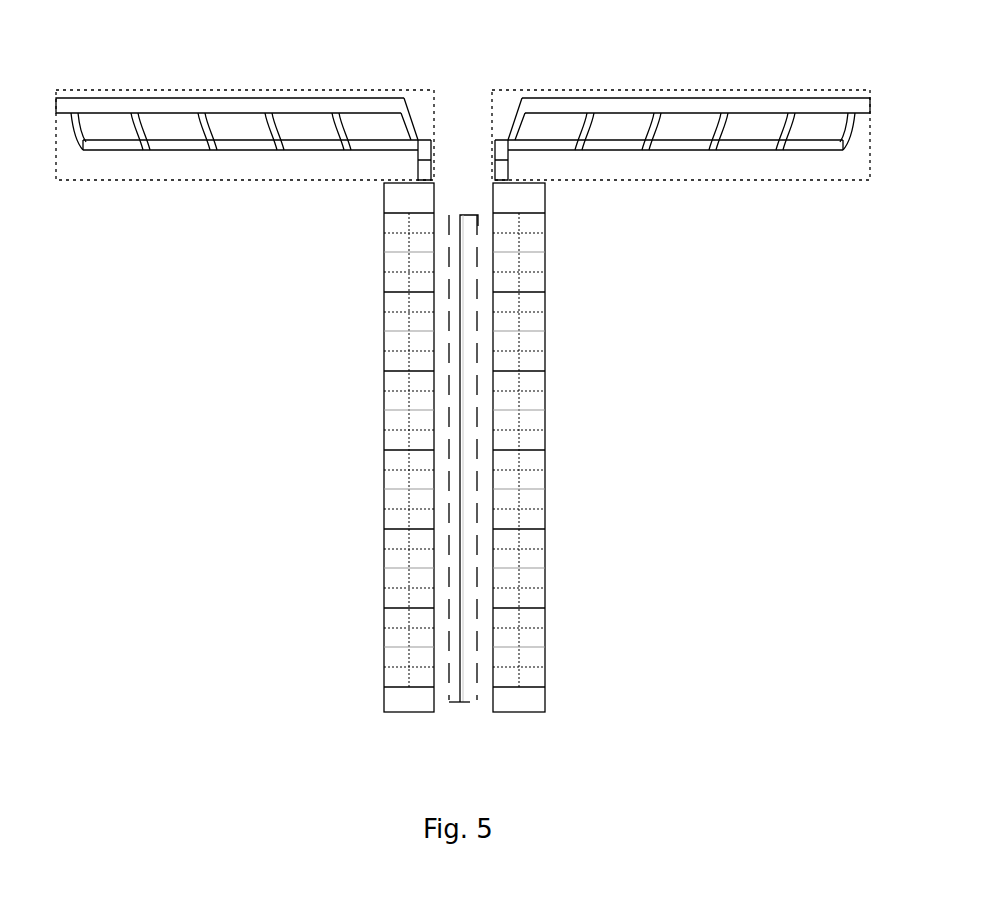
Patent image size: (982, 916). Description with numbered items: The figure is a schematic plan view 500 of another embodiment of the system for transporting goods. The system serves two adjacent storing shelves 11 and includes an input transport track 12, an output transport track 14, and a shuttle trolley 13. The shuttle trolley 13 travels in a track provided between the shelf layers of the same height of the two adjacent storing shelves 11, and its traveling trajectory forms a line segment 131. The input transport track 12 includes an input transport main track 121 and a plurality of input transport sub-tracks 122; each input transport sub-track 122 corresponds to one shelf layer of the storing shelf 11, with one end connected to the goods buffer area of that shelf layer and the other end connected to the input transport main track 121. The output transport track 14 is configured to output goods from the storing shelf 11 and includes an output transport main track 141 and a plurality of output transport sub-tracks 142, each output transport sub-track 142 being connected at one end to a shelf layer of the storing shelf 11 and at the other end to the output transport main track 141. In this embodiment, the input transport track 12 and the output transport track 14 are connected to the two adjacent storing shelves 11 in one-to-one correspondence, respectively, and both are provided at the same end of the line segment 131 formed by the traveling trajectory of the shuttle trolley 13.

The schematic plan view 500 is at (836, 31).
The storing shelf 11 is at (545, 302).
The input transport track 12 is at (315, 90).
The input transport main track 121 is at (192, 98).
The input transport sub-track 122 is at (128, 150).
The shuttle trolley 13 is at (483, 469).
The line segment 131 is at (470, 704).
The output transport track 14 is at (750, 90).
The output transport main track 141 is at (602, 97).
The output transport sub-track 142 is at (622, 150).